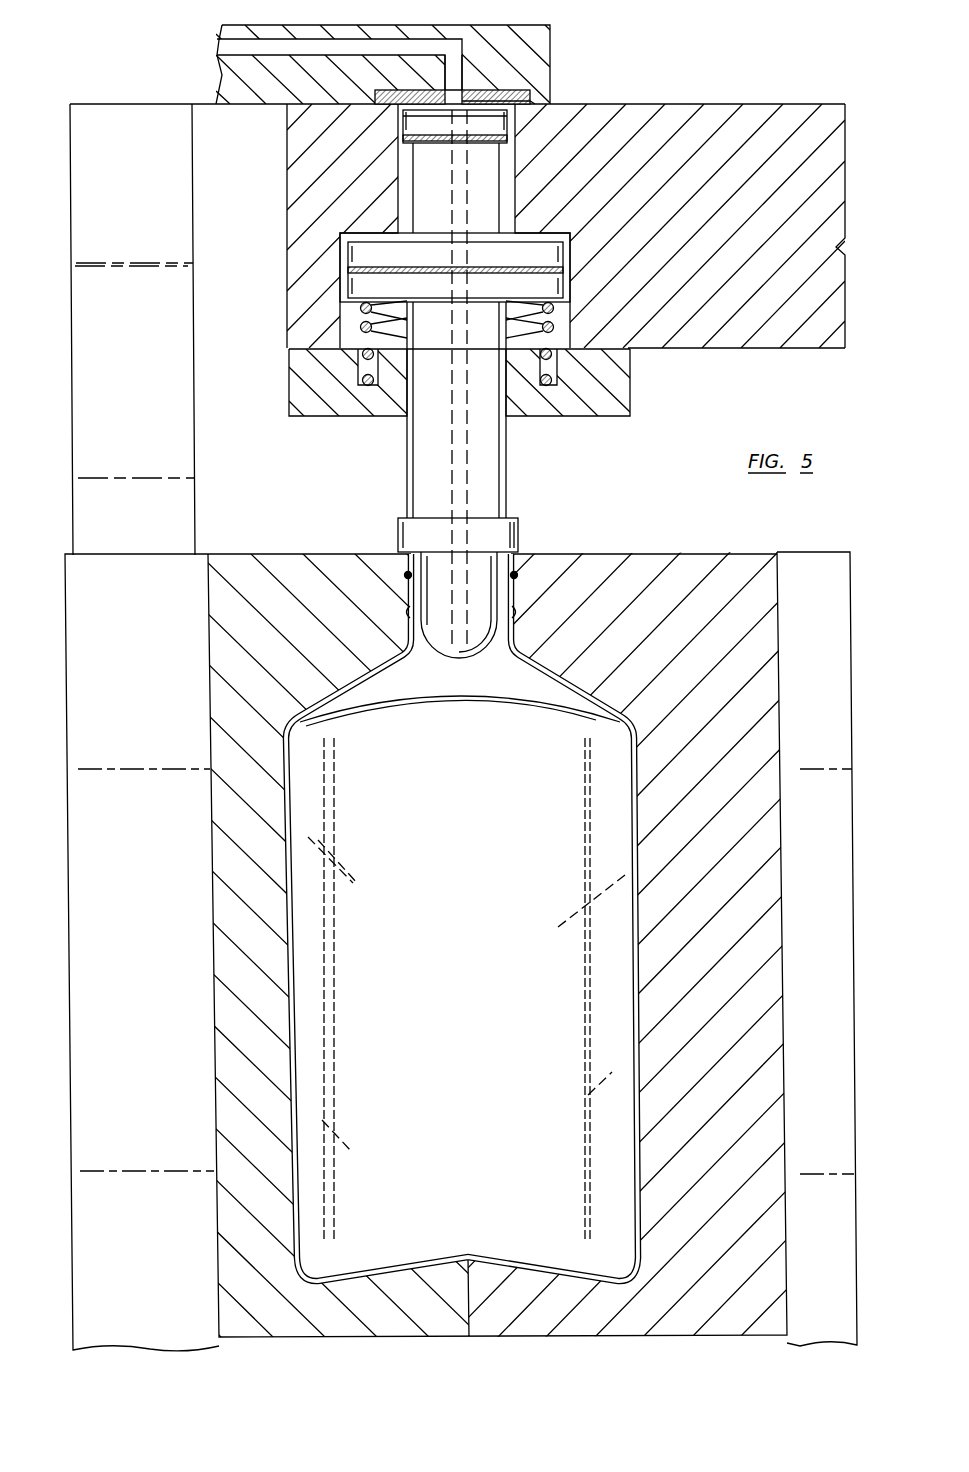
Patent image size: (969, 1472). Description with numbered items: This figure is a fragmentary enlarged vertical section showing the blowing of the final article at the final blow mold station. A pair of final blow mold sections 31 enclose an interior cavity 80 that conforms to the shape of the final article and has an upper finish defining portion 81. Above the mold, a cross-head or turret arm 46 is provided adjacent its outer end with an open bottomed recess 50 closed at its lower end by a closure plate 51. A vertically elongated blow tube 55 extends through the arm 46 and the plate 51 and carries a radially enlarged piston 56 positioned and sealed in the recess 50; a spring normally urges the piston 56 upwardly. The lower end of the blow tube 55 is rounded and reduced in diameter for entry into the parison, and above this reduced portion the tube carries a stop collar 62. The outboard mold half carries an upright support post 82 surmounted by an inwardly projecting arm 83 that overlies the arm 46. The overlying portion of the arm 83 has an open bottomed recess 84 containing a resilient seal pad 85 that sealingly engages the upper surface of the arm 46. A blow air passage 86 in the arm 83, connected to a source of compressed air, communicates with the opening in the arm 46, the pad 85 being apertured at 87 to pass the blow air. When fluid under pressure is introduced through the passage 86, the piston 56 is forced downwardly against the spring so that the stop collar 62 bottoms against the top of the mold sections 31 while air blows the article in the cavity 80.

The final blow mold sections 31 is at (268, 576).
The arm 46 is at (795, 112).
The open bottomed recess 50 is at (340, 323).
The closure plate 51 is at (289, 408).
The blow tube 55 is at (405, 489).
The piston 56 is at (340, 263).
The stop collar 62 is at (408, 540).
The interior cavity 80 is at (634, 816).
The finish defining portion 81 is at (520, 609).
The support post 82 is at (122, 424).
The arm 83 is at (558, 27).
The open bottomed recess 84 is at (520, 92).
The resilient seal pad 85 is at (532, 100).
The blow air passage 86 is at (228, 48).
The aperture 87 is at (455, 88).